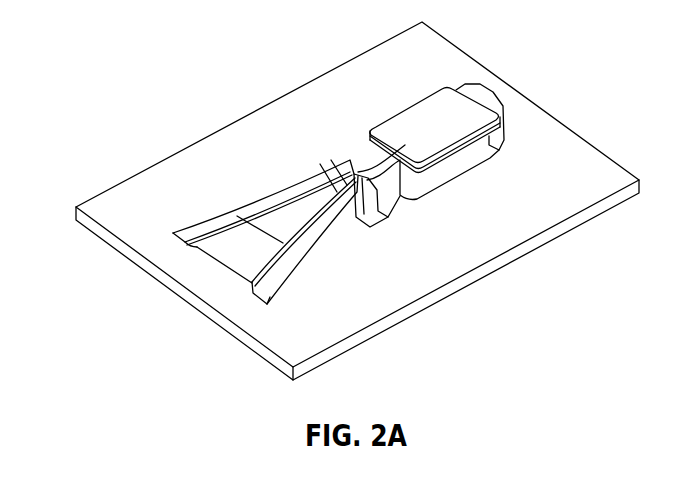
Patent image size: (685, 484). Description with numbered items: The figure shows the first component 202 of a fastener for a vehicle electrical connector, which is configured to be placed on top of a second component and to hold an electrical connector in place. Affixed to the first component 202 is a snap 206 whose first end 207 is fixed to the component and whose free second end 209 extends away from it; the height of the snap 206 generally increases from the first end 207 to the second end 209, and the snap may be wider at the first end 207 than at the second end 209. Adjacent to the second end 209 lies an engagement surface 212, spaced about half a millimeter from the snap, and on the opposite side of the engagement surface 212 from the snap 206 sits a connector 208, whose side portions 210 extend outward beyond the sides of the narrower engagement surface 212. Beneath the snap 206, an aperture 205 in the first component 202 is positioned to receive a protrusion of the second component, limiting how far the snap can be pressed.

The first component 202 is at (392, 60).
The aperture 205 is at (239, 236).
The snap 206 is at (298, 195).
The first end 207 is at (236, 241).
The connector 208 is at (393, 122).
The second end 209 is at (327, 263).
The side portions 210 is at (465, 142).
The engagement surface 212 is at (366, 174).